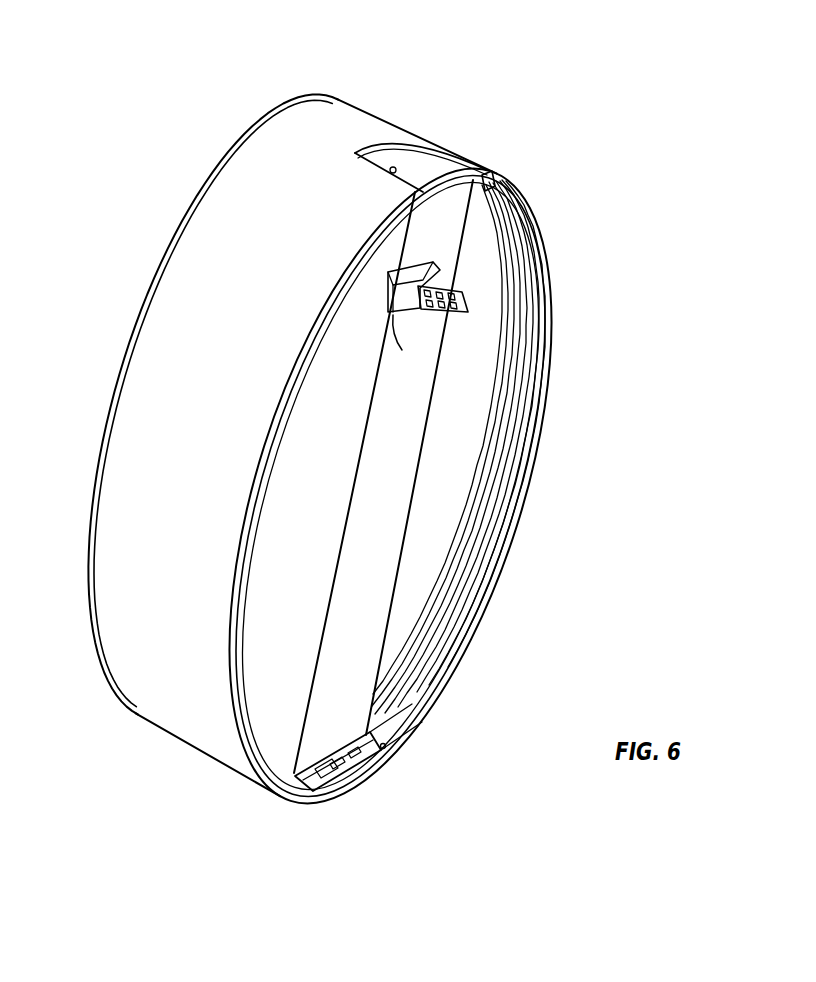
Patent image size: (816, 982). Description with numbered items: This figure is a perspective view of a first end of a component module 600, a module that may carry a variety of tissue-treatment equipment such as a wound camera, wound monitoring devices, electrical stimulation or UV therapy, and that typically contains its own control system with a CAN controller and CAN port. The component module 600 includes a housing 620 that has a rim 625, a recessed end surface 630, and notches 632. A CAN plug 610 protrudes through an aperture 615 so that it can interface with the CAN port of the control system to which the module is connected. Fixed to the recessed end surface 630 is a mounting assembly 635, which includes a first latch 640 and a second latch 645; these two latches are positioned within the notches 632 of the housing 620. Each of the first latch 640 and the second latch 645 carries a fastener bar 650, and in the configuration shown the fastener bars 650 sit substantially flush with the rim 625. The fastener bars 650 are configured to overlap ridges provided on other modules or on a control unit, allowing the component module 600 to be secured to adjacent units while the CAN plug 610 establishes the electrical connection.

The component module 600 is at (135, 60).
The CAN plug 610 is at (438, 272).
The aperture 615 is at (406, 349).
The housing 620 is at (353, 117).
The rim 625 is at (537, 252).
The recessed end surface 630 is at (453, 492).
The notches 632 is at (387, 175).
The mounting assembly 635 is at (363, 688).
The first latch 640 is at (438, 163).
The second latch 645 is at (370, 755).
The fastener bar 650 is at (487, 209).